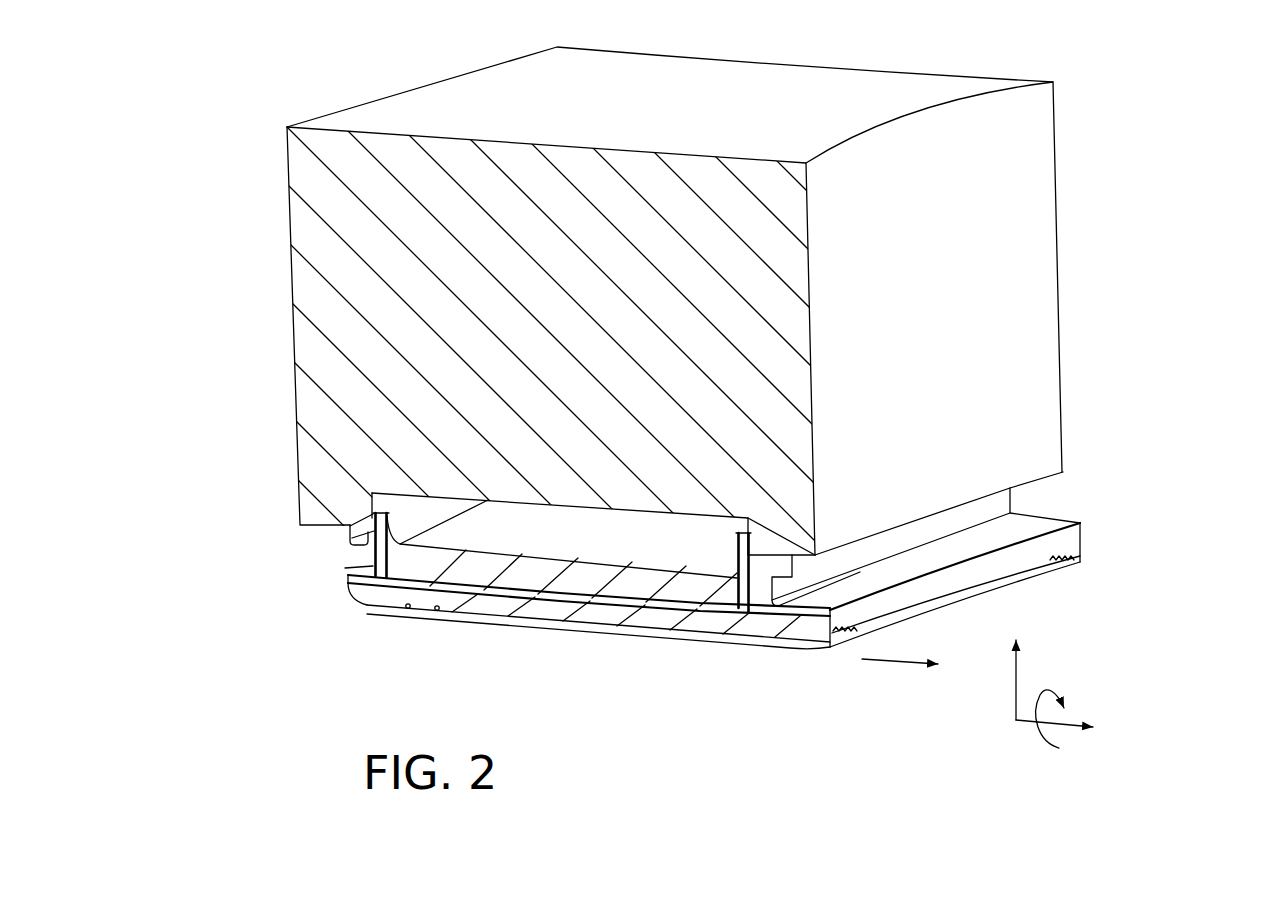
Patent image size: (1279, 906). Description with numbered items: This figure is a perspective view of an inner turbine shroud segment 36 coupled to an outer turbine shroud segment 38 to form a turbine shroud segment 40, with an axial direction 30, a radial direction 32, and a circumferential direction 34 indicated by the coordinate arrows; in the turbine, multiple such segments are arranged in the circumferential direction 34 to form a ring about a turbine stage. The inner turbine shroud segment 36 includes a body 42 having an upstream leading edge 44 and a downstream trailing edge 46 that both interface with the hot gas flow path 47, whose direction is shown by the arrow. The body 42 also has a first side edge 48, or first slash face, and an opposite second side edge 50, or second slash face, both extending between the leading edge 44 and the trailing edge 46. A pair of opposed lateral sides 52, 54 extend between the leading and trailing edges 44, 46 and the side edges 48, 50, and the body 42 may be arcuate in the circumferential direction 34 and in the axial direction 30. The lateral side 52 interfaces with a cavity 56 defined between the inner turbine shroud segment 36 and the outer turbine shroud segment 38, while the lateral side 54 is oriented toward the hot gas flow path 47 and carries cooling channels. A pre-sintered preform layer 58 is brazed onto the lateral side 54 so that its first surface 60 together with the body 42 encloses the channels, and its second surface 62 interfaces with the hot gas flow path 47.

The axial direction 30 is at (1028, 722).
The radial direction 32 is at (1014, 688).
The circumferential direction 34 is at (1048, 690).
The inner turbine shroud segment 36 is at (1081, 557).
The outer turbine shroud segment 38 is at (1056, 128).
The turbine shroud segment 40 is at (635, 381).
The body 42 is at (548, 606).
The leading edge 44 is at (367, 600).
The trailing edge 46 is at (1018, 557).
The hot gas flow path 47 is at (892, 663).
The first side edge 48 is at (700, 625).
The second side edge 50 is at (1083, 530).
The lateral side 52 is at (662, 542).
The lateral side 54 is at (758, 640).
The cavity 56 is at (628, 538).
The pre-sintered preform layer 58 is at (645, 632).
The first surface 60 is at (487, 612).
The second surface 62 is at (450, 612).